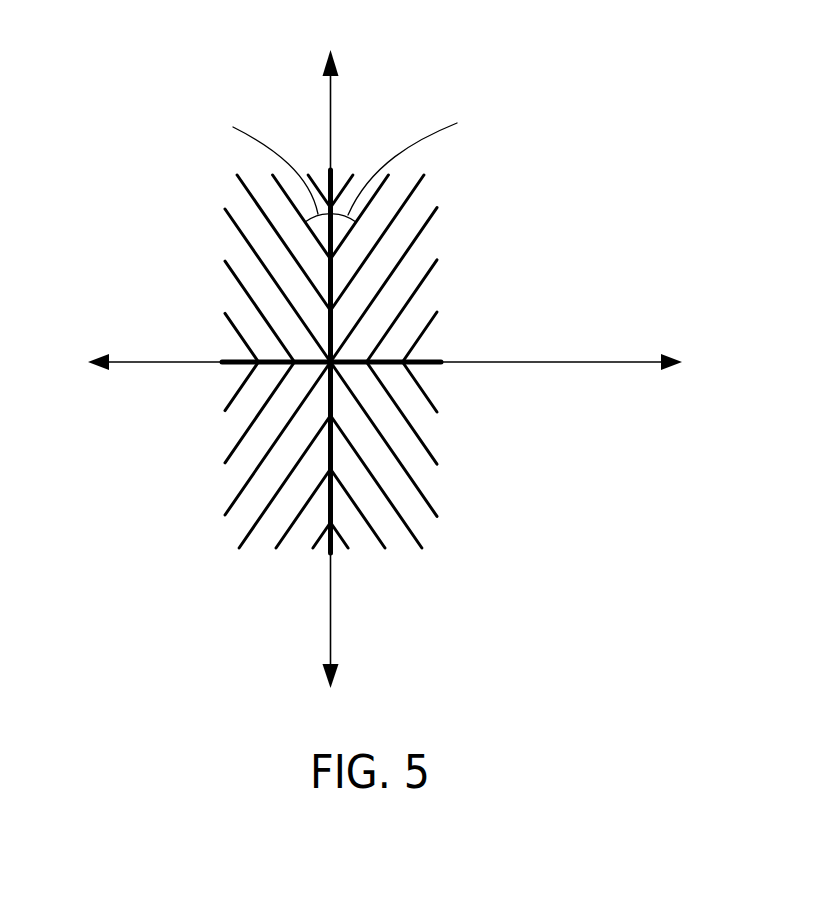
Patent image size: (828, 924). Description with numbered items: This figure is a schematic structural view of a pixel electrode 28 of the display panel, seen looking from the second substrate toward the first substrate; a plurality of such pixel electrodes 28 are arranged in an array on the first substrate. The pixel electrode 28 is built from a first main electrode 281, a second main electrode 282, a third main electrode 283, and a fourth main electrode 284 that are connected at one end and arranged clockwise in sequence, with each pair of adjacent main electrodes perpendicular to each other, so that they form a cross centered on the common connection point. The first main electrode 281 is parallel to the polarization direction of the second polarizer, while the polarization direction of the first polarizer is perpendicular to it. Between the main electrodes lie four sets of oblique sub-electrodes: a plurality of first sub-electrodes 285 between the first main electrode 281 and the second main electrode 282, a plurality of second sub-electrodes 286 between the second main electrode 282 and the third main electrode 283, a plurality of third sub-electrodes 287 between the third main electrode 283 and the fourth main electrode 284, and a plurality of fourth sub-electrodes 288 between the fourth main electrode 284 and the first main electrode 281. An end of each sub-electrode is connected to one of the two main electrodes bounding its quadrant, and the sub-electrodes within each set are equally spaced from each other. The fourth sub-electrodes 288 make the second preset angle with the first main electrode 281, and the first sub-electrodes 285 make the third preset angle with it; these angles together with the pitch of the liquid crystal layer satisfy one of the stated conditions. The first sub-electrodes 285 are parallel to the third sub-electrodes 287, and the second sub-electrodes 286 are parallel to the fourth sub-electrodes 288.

The pixel electrode 28 is at (414, 28).
The first main electrode 281 is at (405, 200).
The second main electrode 282 is at (440, 364).
The third main electrode 283 is at (329, 545).
The fourth main electrode 284 is at (225, 360).
The first sub-electrodes 285 is at (433, 263).
The second sub-electrodes 286 is at (392, 500).
The third sub-electrodes 287 is at (237, 443).
The fourth sub-electrodes 288 is at (265, 257).